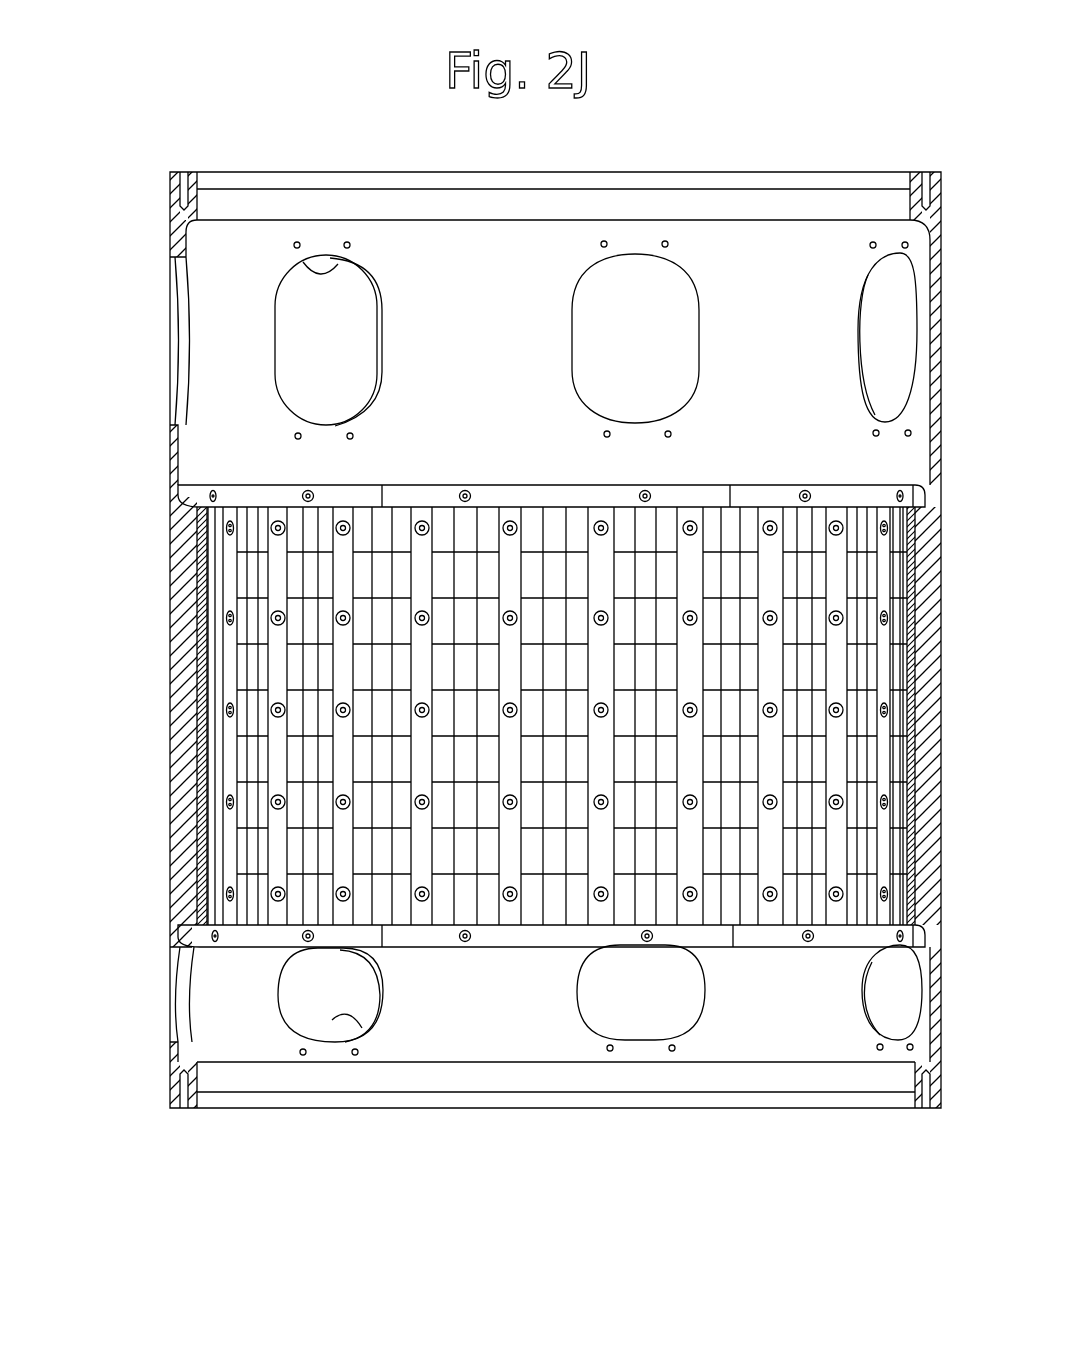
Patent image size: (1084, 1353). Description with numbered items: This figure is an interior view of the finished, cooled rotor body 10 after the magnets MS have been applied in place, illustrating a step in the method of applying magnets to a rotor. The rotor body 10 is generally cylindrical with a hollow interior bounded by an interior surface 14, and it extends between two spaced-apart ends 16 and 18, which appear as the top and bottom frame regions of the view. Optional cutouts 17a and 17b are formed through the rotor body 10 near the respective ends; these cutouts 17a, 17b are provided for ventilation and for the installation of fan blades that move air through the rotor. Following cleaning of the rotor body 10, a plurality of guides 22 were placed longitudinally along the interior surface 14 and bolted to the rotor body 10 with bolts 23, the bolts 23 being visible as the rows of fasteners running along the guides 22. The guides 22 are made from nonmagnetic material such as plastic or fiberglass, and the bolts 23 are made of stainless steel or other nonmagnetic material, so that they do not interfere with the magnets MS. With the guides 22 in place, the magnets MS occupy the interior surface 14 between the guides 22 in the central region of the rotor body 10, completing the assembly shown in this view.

The rotor body 10 is at (160, 690).
The interior surface 14 is at (218, 358).
The end 16 is at (835, 178).
The cutout 17a is at (318, 262).
The cutout 17b is at (348, 1022).
The end 18 is at (745, 1100).
The guide 22 is at (228, 562).
The bolt 23 is at (268, 908).
The magnets MS is at (260, 862).